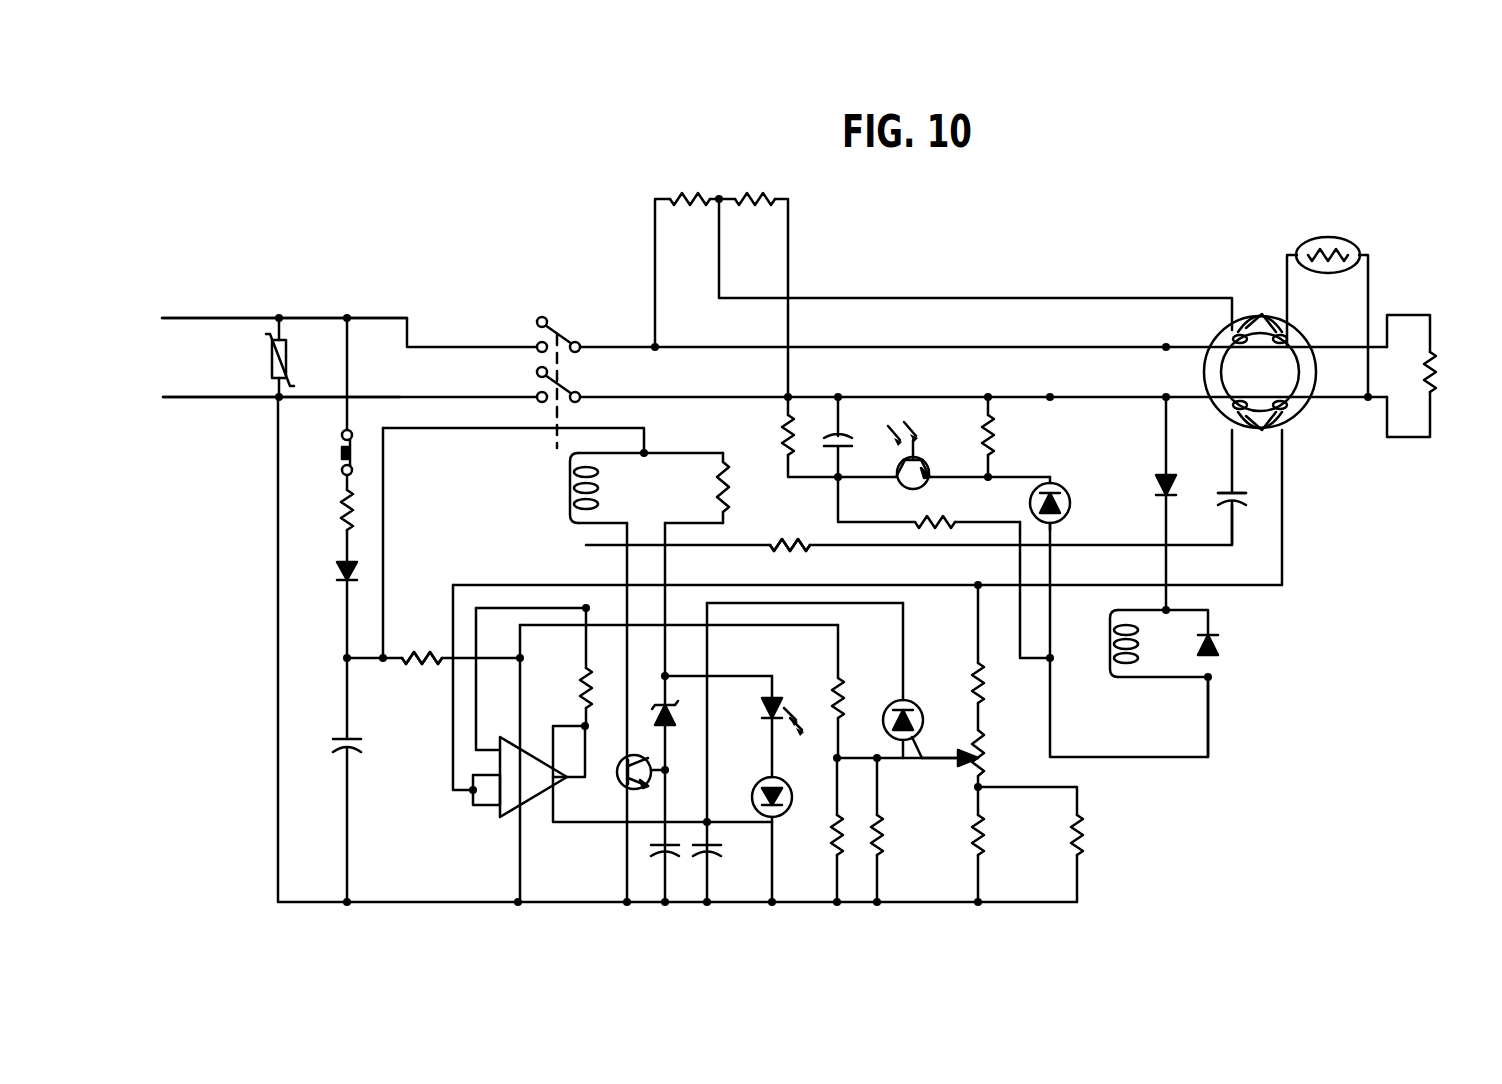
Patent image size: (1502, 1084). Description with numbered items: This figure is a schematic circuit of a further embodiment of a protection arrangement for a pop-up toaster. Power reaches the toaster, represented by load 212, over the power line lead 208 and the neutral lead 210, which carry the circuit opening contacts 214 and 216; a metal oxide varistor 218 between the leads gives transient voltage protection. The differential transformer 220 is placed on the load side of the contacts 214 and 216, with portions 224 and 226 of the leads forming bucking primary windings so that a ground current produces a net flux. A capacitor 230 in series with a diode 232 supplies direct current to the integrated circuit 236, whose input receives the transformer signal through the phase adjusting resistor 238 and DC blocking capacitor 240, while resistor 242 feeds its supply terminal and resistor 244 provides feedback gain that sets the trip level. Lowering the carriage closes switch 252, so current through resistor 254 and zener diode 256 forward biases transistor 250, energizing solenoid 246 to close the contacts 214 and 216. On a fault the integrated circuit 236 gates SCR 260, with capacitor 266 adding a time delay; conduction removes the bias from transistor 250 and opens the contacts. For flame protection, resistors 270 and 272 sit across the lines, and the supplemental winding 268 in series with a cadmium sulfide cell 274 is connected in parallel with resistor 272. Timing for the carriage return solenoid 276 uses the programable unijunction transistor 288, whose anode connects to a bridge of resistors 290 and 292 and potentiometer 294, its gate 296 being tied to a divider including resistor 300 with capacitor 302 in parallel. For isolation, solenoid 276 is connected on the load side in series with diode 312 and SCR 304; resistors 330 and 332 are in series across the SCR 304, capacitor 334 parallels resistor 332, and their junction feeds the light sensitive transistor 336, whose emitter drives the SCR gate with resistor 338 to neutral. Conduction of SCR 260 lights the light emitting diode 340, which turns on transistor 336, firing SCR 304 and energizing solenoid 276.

The power line lead 208 is at (290, 318).
The neutral lead 210 is at (183, 398).
The load 212 is at (1438, 380).
The circuit opening contact 214 is at (560, 332).
The circuit opening contact 216 is at (560, 392).
The metal oxide varistor 218 is at (270, 372).
The differential transformer 220 is at (1214, 340).
The primary winding 224 is at (1236, 356).
The primary winding 226 is at (1296, 386).
The capacitor 230 is at (332, 742).
The diode 232 is at (337, 570).
The integrated circuit 236 is at (505, 822).
The phase adjusting resistor 238 is at (786, 542).
The DC blocking capacitor 240 is at (1222, 500).
The resistor 242 is at (428, 670).
The resistor 244 is at (578, 690).
The solenoid 246 is at (600, 498).
The transistor 250 is at (617, 772).
The switch 252 is at (340, 466).
The resistor 254 is at (734, 478).
The zener diode 256 is at (678, 716).
The SCR 260 is at (752, 794).
The capacitor 266 is at (722, 850).
The supplemental winding 268 is at (1266, 312).
The resistor 270 is at (692, 194).
The resistor 272 is at (762, 194).
The cadmium sulfide cell 274 is at (1322, 240).
The carriage return solenoid 276 is at (1168, 668).
The programable unijunction transistor 288 is at (886, 712).
The resistor 290 is at (968, 676).
The resistor 292 is at (970, 828).
The potentiometer 294 is at (972, 780).
The gate 296 is at (968, 744).
The resistor 300 is at (886, 842).
The capacitor 302 is at (830, 844).
The SCR 304 is at (1070, 494).
The diode 312 is at (1150, 480).
The resistor 330 is at (944, 516).
The resistor 332 is at (782, 442).
The capacitor 334 is at (850, 440).
The light sensitive transistor 336 is at (958, 456).
The resistor 338 is at (1000, 430).
The light emitting diode 340 is at (786, 706).